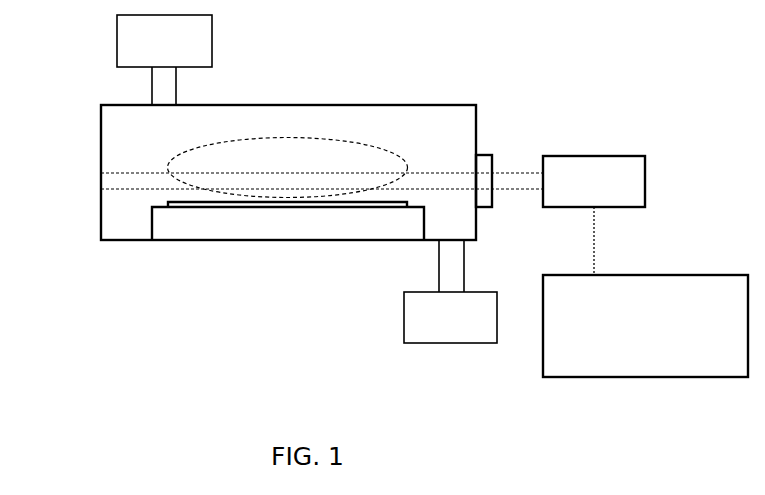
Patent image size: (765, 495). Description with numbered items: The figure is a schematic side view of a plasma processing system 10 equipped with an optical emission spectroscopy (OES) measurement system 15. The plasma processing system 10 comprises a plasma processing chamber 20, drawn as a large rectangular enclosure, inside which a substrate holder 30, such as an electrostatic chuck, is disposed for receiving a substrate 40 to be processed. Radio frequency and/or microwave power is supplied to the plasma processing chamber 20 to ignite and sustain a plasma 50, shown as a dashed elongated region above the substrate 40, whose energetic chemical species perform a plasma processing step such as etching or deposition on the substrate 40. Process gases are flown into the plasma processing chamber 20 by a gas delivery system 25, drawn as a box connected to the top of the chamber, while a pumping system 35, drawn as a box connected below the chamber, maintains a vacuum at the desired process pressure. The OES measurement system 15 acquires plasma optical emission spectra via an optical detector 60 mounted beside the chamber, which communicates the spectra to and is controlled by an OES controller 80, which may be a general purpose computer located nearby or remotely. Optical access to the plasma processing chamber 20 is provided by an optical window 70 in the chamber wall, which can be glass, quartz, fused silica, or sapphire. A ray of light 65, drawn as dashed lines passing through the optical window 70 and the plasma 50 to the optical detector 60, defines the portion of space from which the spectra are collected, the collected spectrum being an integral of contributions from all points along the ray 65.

The plasma processing system 10 is at (88, 66).
The optical emission spectroscopy (OES) measurement system 15 is at (600, 90).
The plasma processing chamber 20 is at (100, 212).
The gas delivery system 25 is at (150, 54).
The substrate holder 30 is at (187, 228).
The pumping system 35 is at (436, 330).
The substrate 40 is at (257, 208).
The plasma 50 is at (241, 167).
The optical detector 60 is at (580, 193).
The ray of light 65 is at (450, 172).
The optical window 70 is at (492, 154).
The OES controller 80 is at (631, 336).